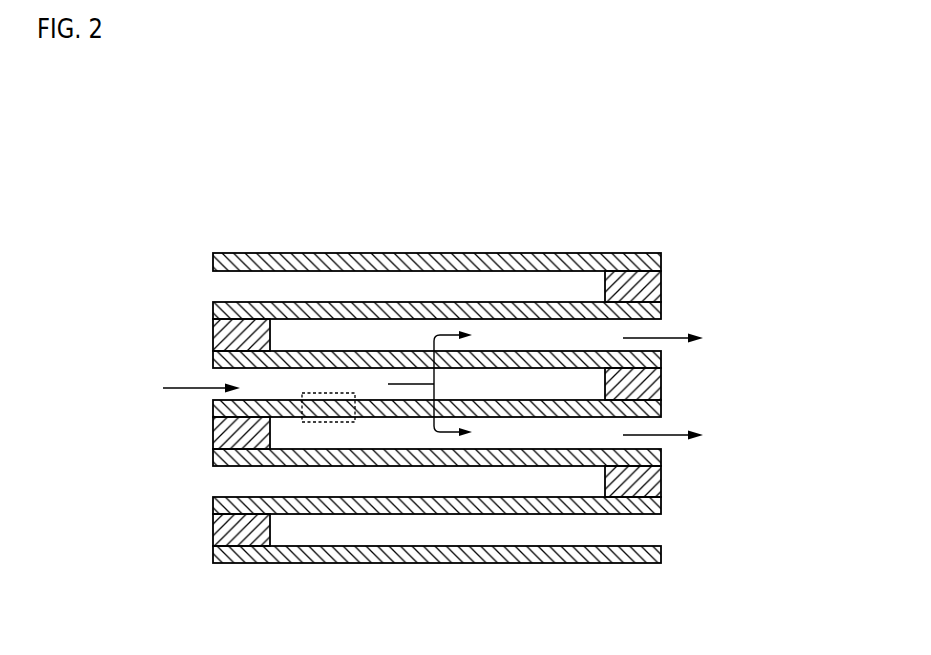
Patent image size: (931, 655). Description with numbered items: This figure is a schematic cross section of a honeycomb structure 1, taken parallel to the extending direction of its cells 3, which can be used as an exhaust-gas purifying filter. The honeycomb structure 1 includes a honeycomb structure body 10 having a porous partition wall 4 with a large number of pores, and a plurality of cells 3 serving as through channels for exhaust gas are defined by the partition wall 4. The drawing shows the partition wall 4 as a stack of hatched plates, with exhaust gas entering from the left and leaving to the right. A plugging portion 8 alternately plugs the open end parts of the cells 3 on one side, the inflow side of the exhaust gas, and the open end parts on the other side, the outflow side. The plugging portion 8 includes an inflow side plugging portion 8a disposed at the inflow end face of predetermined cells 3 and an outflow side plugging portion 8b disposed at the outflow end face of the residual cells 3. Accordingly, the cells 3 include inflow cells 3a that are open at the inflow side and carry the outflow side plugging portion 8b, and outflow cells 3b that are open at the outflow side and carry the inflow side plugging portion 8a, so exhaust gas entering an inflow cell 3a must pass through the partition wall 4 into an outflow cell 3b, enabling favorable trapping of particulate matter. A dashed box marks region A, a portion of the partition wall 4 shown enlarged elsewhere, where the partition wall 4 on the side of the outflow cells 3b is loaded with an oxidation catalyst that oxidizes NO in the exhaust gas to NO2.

The honeycomb structure 1 is at (572, 160).
The honeycomb structure body 10 is at (430, 247).
The partition wall 4 is at (212, 257).
The plugging portion 8 is at (438, 408).
The inflow side plugging portion 8a is at (212, 337).
The outflow side plugging portion 8b is at (662, 384).
The cells 3 is at (441, 400).
The inflow cells 3a is at (250, 375).
The outflow cells 3b is at (633, 444).
The region A is at (303, 423).